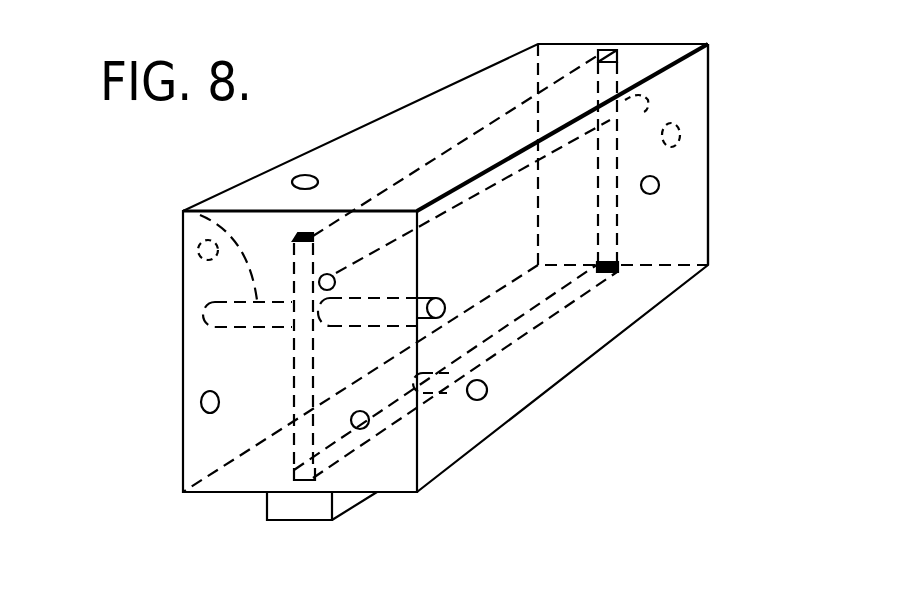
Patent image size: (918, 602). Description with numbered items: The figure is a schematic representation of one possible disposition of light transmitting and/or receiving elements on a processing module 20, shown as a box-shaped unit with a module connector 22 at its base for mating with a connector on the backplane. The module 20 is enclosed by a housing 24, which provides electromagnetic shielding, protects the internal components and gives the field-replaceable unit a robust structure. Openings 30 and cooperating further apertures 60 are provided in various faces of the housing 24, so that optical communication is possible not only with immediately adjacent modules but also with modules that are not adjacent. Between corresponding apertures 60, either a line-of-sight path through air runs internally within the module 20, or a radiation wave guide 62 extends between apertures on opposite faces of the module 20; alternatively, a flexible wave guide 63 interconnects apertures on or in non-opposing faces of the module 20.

The processing module 20 is at (118, 321).
The module connector 22 is at (301, 512).
The housing 24 is at (690, 183).
The mounting holes 30 is at (308, 175).
The further apertures 60 is at (654, 66).
The optical wave guide 62 is at (192, 212).
The flexible wave guide 63 is at (447, 397).